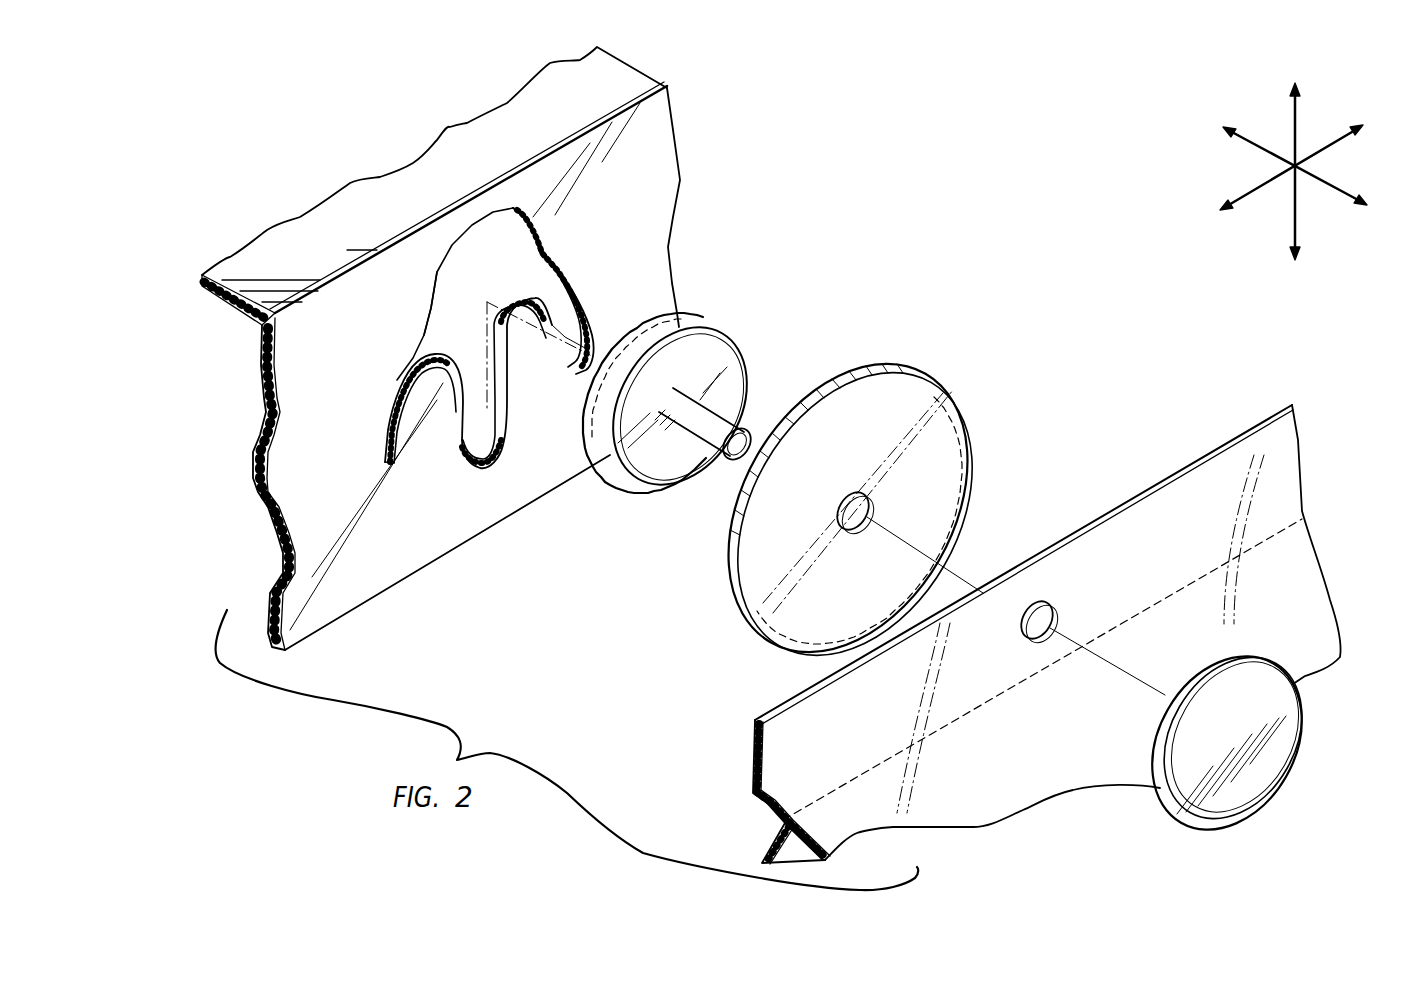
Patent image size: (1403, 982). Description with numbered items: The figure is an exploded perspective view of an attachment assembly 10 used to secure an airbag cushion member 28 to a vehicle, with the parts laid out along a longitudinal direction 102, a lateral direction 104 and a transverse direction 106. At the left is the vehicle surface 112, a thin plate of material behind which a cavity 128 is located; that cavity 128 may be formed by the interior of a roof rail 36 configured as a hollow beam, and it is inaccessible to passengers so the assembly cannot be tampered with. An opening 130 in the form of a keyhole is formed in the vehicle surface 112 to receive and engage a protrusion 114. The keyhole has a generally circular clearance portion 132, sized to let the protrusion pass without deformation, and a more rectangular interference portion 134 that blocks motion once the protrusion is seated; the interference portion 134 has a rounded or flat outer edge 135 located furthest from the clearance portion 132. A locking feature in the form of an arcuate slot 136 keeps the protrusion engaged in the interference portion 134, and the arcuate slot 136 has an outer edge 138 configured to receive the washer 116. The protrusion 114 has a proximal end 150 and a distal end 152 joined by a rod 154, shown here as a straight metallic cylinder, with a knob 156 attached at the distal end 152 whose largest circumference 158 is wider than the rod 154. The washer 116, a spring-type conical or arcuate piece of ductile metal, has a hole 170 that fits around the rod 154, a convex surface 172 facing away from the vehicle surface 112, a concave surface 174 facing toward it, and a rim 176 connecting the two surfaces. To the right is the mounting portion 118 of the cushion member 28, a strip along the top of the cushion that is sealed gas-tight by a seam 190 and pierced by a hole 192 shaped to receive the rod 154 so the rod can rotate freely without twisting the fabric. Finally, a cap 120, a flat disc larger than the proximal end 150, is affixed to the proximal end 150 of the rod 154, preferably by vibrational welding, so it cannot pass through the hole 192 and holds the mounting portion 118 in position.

The attachment assembly 10 is at (1005, 200).
The cushion member 28 is at (750, 840).
The roof rail 36 is at (336, 179).
The longitudinal direction 102 is at (1338, 193).
The lateral direction 104 is at (1253, 195).
The transverse direction 106 is at (1293, 110).
The vehicle surface 112 is at (681, 153).
The protrusion 114 is at (753, 403).
The washer 116 is at (968, 388).
The mounting portion 118 is at (1305, 399).
The cap 120 is at (1242, 770).
The cavity 128 is at (487, 248).
The opening 130 is at (512, 206).
The clearance portion 132 is at (442, 270).
The interference portion 134 is at (480, 432).
The outer edge 135 is at (500, 443).
The arcuate slot 136 is at (593, 307).
The outer edge 138 is at (572, 278).
The proximal end 150 is at (695, 437).
The distal end 152 is at (681, 435).
The rod 154 is at (687, 430).
The knob 156 is at (585, 455).
The largest circumference 158 is at (660, 317).
The hole 170 is at (868, 512).
The convex surface 172 is at (943, 465).
The concave surface 174 is at (762, 650).
The rim 176 is at (843, 368).
The seam 190 is at (977, 707).
The hole 192 is at (1060, 613).